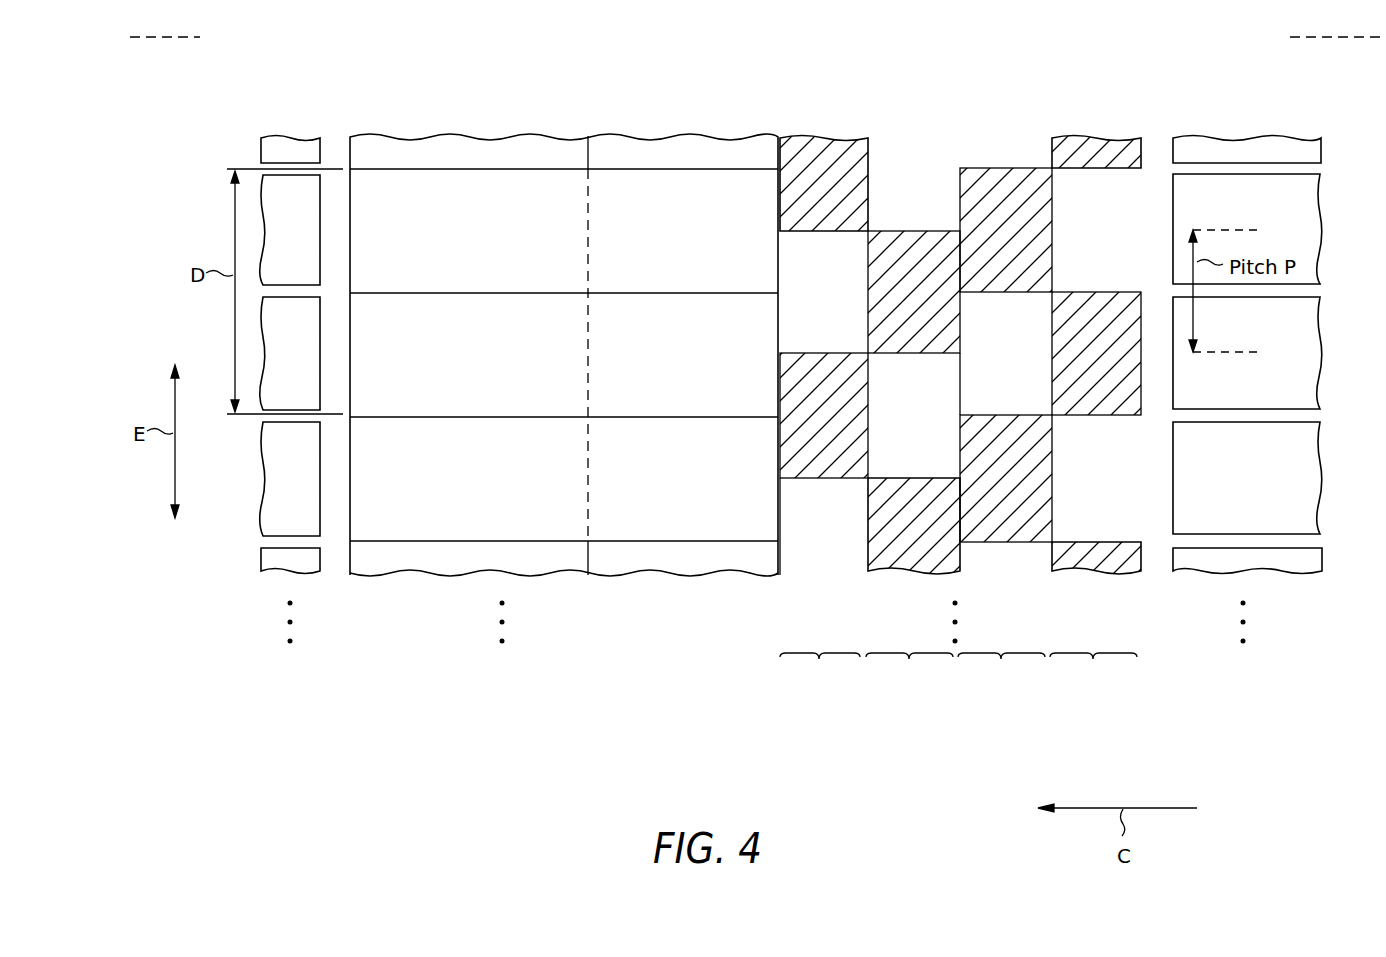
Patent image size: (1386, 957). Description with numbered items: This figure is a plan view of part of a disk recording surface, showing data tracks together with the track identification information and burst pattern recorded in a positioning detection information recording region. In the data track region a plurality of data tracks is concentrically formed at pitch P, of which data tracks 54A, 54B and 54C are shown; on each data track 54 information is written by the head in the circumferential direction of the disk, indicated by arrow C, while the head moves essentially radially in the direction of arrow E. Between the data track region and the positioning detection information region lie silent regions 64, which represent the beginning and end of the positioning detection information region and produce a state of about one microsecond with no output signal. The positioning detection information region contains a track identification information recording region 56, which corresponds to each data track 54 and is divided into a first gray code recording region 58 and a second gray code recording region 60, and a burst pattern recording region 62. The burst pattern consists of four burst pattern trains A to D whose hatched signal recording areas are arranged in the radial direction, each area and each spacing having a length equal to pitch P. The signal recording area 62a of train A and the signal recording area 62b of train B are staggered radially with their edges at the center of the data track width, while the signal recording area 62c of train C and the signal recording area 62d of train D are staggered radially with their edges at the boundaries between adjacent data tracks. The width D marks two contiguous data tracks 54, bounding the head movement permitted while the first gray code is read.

The data track 54 is at (320, 41).
The data track 54A is at (1318, 204).
The data track 54B is at (1316, 383).
The data track 54C is at (1314, 467).
The track identification information recording region 56 is at (349, 41).
The first gray code recording region 58 is at (350, 111).
The second gray code recording region 60 is at (591, 111).
The burst pattern recording region 62 is at (781, 41).
The signal recording area of burst pattern train A 62a is at (857, 358).
The signal recording area of burst pattern train B 62b is at (945, 483).
The signal recording area of burst pattern train C 62c is at (1027, 418).
The signal recording area of burst pattern train D 62d is at (1089, 137).
The silent region 64 is at (347, 41).